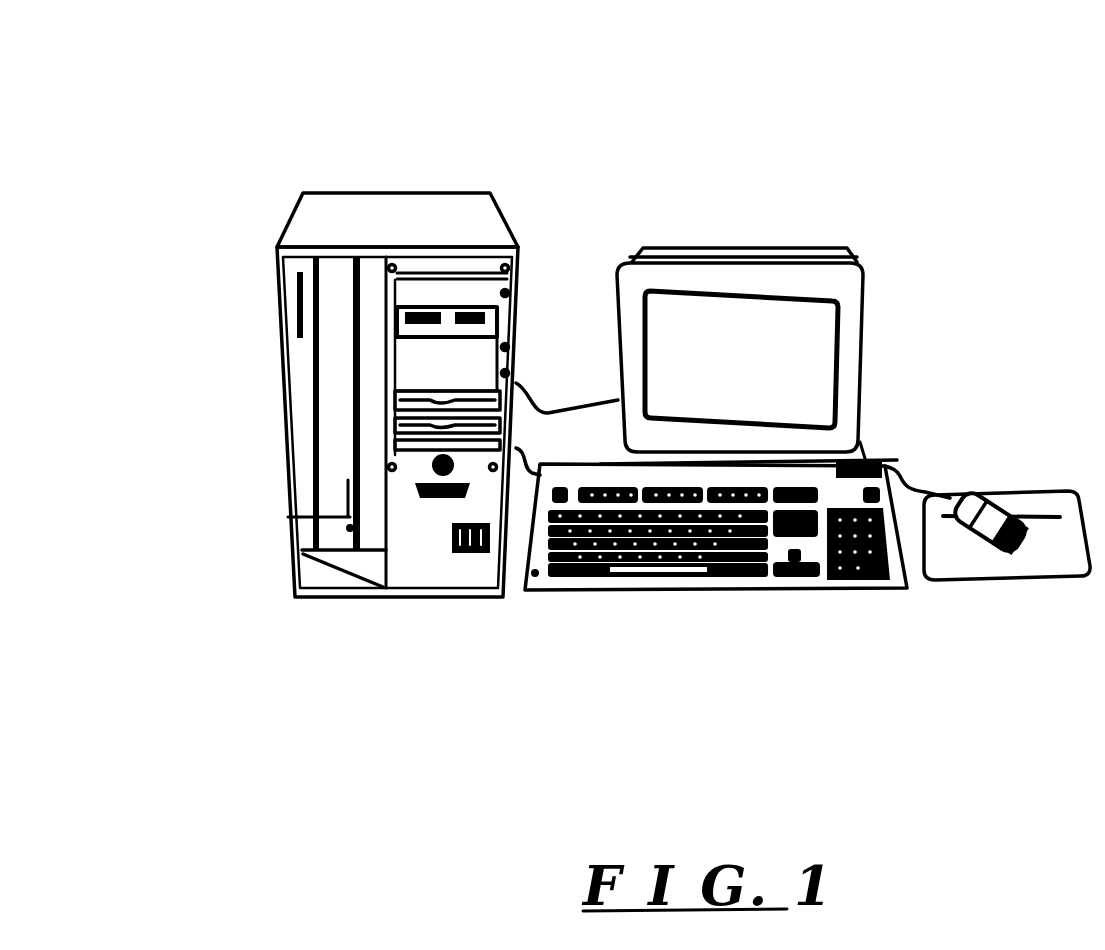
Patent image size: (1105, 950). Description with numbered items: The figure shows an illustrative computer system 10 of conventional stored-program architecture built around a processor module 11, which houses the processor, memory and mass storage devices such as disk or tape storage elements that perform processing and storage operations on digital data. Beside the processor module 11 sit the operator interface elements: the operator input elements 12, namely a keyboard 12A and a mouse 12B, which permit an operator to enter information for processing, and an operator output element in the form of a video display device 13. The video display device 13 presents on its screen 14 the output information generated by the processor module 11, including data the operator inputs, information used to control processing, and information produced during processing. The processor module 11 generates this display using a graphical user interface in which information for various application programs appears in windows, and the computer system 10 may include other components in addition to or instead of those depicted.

The computer system 10 is at (200, 90).
The processor module 11 is at (405, 192).
The operator input element(s) 12 is at (908, 649).
The keyboard 12A is at (758, 596).
The mouse 12B is at (1068, 580).
The video display device 13 is at (880, 357).
The screen 14 is at (657, 332).